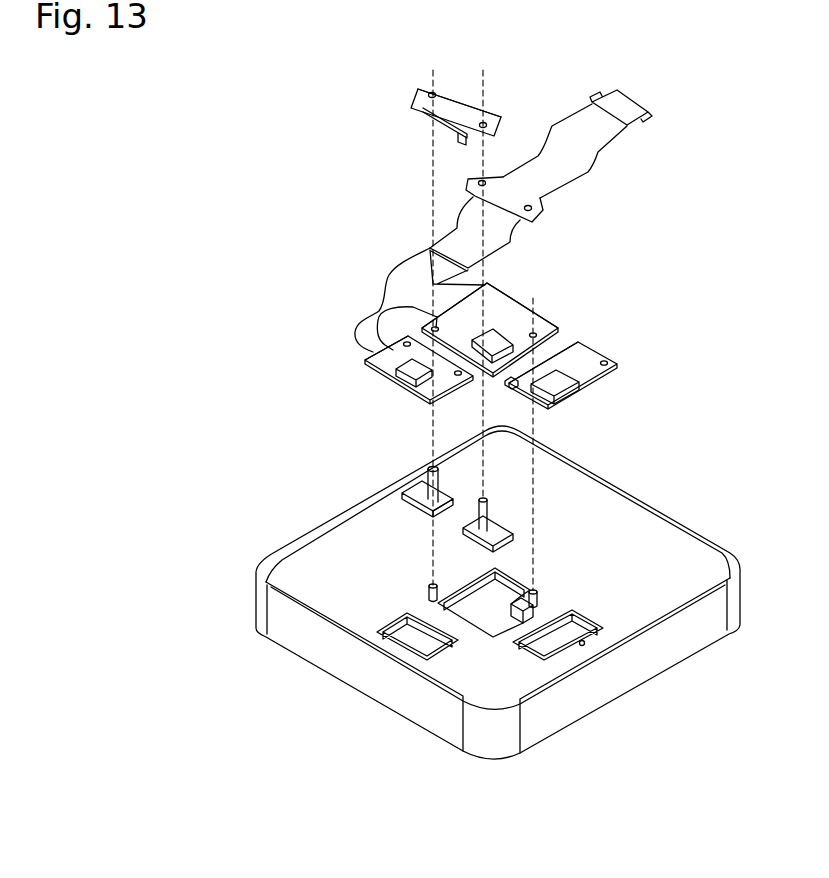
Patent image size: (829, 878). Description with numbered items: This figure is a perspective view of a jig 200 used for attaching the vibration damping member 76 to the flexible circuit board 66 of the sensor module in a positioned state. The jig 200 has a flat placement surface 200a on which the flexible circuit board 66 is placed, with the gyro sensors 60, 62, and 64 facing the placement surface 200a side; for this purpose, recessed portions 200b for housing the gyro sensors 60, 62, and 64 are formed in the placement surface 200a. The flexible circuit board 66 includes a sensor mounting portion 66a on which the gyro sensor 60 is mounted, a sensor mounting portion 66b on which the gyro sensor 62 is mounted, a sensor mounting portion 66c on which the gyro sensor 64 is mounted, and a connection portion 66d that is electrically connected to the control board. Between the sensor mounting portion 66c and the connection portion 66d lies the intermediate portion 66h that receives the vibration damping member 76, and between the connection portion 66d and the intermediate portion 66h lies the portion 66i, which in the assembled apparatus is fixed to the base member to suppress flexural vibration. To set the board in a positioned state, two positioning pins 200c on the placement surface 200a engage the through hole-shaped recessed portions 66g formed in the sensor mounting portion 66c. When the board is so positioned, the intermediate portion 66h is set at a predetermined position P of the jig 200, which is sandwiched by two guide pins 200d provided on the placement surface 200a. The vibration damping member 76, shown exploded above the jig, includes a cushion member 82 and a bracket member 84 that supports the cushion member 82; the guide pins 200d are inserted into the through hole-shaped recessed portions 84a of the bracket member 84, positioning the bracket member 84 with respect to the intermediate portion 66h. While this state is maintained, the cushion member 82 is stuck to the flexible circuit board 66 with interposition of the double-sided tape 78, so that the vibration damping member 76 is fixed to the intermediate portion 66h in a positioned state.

The jig 200 is at (321, 526).
The placement surface 200a is at (683, 530).
The recessed portions 200b is at (404, 631).
The positioning pins 200c is at (431, 585).
The guide pins 200d is at (431, 466).
The predetermined position P is at (445, 516).
The gyro sensor 60 is at (383, 377).
The gyro sensor 62 is at (600, 383).
The gyro sensor 64 is at (486, 338).
The flexible circuit board 66 is at (385, 283).
The sensor mounting portion 66a is at (364, 357).
The sensor mounting portion 66b is at (583, 346).
The sensor mounting portion 66c is at (489, 285).
The connection portion 66d is at (615, 98).
The recessed portions 66g is at (375, 316).
The intermediate portion 66h is at (448, 251).
The portion of the flexible circuit board 66i is at (506, 186).
The vibration damping member 76 is at (405, 88).
The double-sided tape 78 is at (453, 141).
The cushion member 82 is at (425, 113).
The bracket member 84 is at (459, 105).
The recessed portions 84a is at (431, 91).